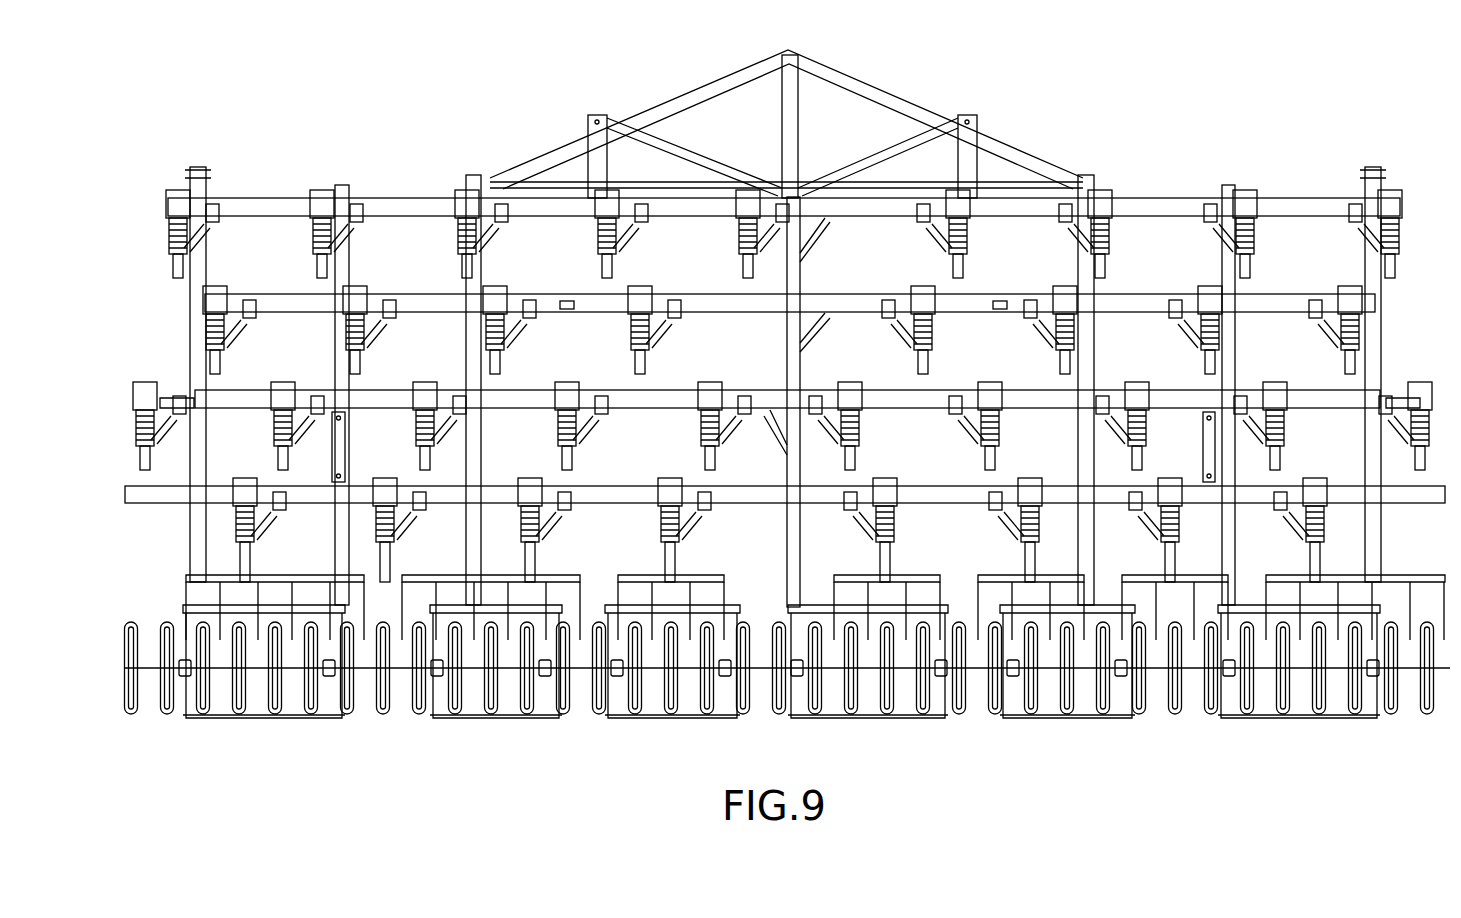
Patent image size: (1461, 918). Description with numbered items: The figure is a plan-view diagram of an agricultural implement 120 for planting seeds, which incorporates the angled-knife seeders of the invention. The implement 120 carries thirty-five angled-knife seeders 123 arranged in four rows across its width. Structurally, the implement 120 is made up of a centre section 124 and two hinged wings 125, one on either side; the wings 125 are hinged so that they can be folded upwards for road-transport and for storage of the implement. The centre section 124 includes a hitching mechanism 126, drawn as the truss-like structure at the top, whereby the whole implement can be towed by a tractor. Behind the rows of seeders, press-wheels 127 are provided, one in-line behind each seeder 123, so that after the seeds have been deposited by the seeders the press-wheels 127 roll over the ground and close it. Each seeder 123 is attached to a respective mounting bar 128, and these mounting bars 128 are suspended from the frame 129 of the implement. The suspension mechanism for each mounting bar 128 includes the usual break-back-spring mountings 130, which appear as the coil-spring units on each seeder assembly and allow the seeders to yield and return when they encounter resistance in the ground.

The implement 120 is at (1185, 162).
The angled-knife seeder 123 is at (912, 333).
The centre section 124 is at (1030, 218).
The hinged wing 125 is at (392, 218).
The hitching mechanism 126 is at (822, 78).
The press-wheel 127 is at (532, 718).
The mounting bar 128 is at (178, 258).
The frame 129 is at (263, 202).
The break-back-spring mounting 130 is at (937, 342).